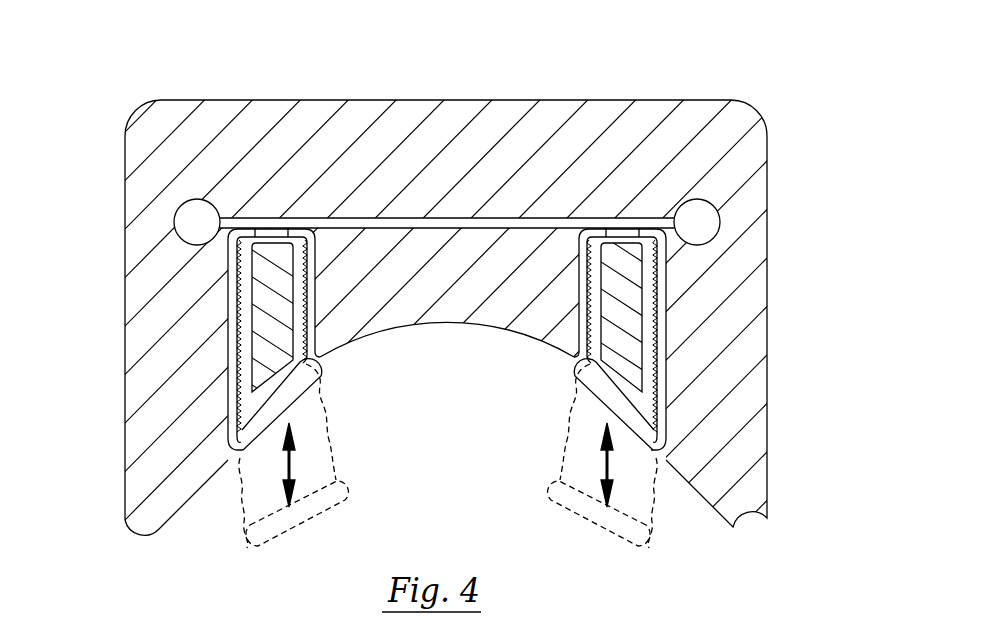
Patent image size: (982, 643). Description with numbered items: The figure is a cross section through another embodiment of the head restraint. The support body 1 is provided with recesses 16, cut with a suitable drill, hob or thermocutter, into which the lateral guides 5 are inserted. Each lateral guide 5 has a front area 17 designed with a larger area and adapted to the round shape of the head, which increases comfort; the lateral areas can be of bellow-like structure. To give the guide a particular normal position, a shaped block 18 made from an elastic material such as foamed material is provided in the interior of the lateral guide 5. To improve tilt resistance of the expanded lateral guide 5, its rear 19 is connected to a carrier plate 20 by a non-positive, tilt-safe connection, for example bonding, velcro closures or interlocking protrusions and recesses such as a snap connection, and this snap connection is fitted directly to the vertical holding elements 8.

The upper support body 1 is at (742, 167).
The upper lateral guide 5 is at (652, 337).
The vertical holding element 8 is at (697, 220).
The recess 16 is at (667, 382).
The front area 17 is at (297, 400).
The block 18 is at (605, 328).
The rear 19 is at (257, 248).
The carrier plate 20 is at (442, 218).